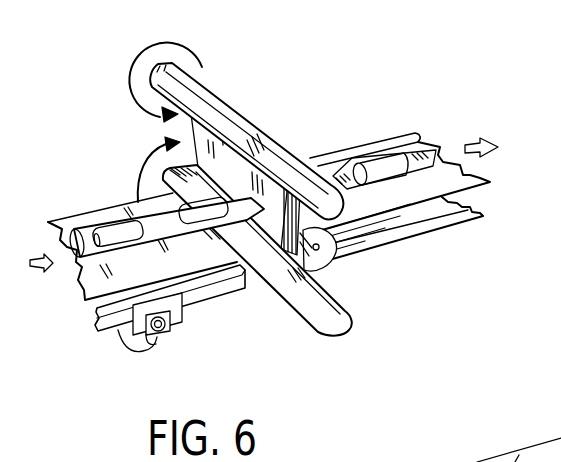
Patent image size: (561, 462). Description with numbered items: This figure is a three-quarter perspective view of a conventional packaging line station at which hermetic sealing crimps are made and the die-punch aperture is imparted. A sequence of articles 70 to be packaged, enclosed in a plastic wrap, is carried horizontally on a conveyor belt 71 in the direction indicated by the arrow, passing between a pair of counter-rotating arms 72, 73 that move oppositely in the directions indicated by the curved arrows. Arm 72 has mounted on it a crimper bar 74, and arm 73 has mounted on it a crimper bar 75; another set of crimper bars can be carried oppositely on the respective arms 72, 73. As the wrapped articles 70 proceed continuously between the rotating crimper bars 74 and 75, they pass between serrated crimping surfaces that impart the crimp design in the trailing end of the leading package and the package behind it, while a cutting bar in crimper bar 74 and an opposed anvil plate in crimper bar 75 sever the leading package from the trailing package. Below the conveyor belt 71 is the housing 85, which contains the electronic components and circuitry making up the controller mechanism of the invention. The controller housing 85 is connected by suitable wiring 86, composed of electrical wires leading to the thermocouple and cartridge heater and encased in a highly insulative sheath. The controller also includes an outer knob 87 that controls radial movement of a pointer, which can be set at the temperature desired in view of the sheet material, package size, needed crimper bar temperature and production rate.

The articles 70 is at (112, 233).
The conveyor belt 71 is at (88, 303).
The arm 72 is at (205, 107).
The arm 73 is at (308, 306).
The crimper bar 74 is at (230, 160).
The crimper bar 75 is at (310, 267).
The housing 85 is at (155, 336).
The wiring 86 is at (127, 343).
The outer knob 87 is at (172, 326).